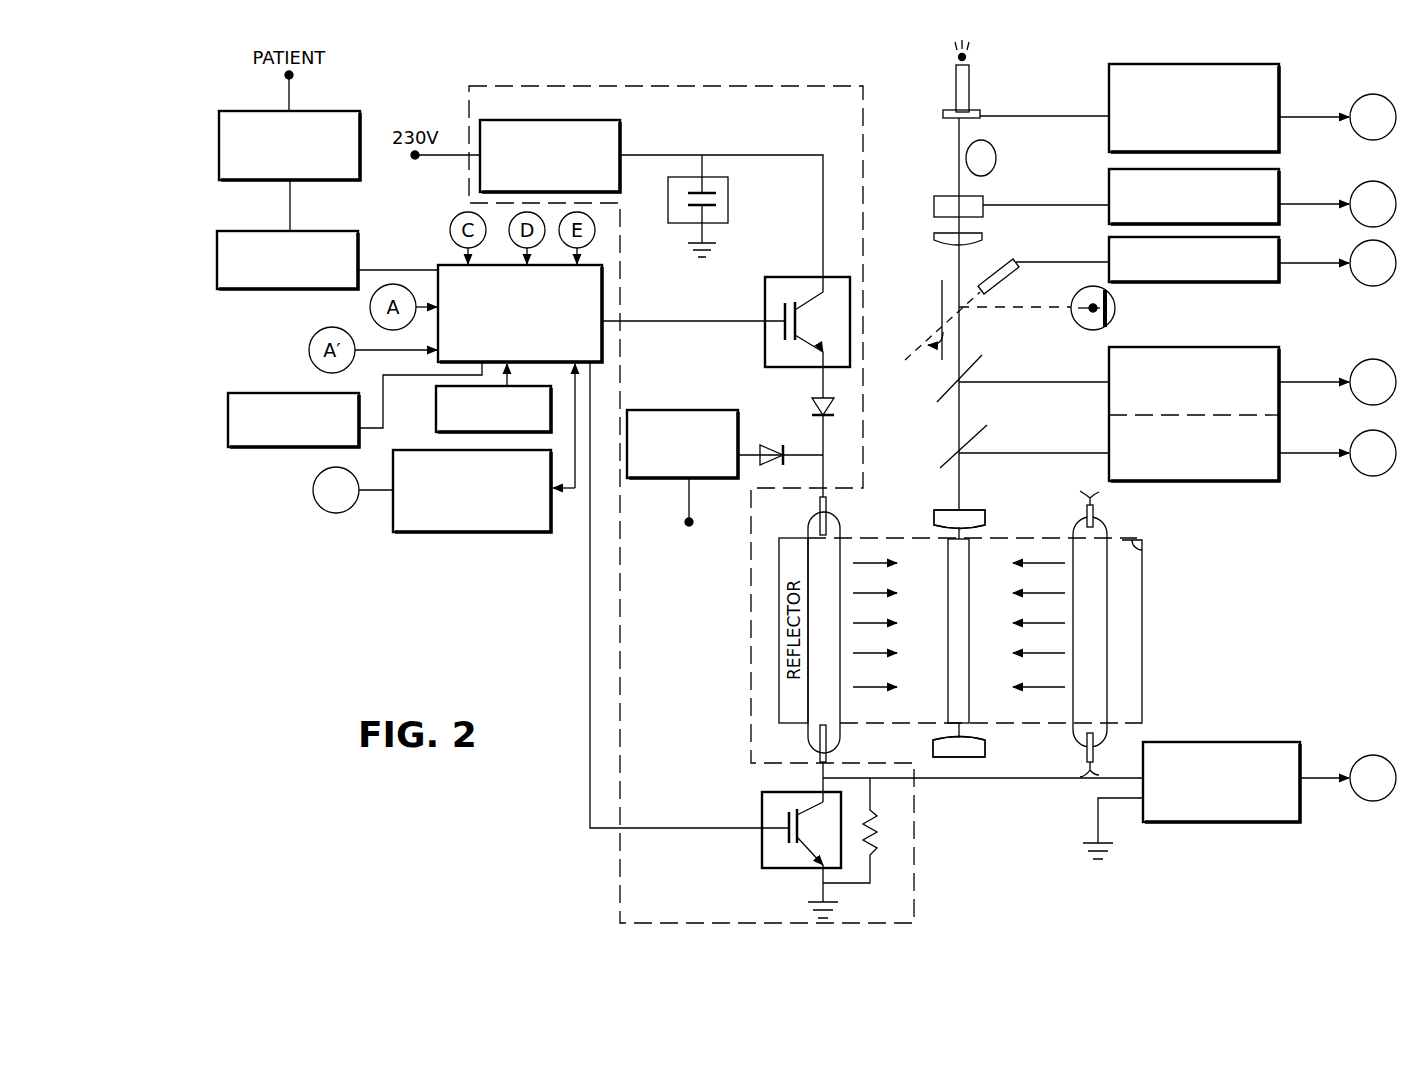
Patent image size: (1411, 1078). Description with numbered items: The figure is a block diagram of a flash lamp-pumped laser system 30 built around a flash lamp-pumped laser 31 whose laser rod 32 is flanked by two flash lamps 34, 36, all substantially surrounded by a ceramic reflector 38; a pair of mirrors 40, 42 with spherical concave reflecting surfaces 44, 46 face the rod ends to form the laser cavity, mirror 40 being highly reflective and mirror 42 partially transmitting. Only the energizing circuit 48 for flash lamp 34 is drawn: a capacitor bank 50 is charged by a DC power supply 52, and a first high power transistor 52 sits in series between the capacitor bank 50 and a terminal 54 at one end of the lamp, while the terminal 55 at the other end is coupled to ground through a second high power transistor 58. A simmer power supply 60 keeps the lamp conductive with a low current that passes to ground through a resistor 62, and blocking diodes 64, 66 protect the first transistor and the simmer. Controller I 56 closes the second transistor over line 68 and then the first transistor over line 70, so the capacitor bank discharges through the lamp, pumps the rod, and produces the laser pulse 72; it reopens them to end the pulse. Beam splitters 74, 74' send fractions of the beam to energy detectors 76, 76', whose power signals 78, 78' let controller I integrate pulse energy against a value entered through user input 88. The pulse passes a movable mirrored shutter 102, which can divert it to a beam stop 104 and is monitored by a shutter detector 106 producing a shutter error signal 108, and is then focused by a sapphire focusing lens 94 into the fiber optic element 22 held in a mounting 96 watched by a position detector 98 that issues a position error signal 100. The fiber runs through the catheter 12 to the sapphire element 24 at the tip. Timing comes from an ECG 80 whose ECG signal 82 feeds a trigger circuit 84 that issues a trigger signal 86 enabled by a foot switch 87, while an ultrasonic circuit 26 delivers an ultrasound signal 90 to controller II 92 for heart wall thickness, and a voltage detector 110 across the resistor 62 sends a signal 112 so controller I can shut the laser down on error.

The catheter 12 is at (955, 96).
The fiber optic element 22 is at (960, 140).
The sapphire element 24 is at (968, 58).
The ultrasonic circuit 26 is at (1108, 88).
The flash lamp-pumped laser system 30 is at (535, 625).
The flash lamp-pumped laser 31 is at (1152, 622).
The laser rod 32 is at (938, 631).
The flash lamp 34 is at (843, 526).
The flash lamp 36 is at (1075, 522).
The ceramic reflector 38 is at (1140, 536).
The mirror 40 is at (985, 752).
The mirror 42 is at (982, 513).
The spherical concave reflecting surface 44 is at (935, 742).
The spherical concave reflecting surface 46 is at (940, 529).
The energizing circuit 48 is at (850, 118).
The capacitor bank 50 is at (728, 214).
The DC power supply / high power transistor T1 52 is at (620, 137).
The terminal 54 is at (815, 512).
The terminal 55 is at (820, 752).
The controller I 56 is at (445, 266).
The high power transistor T2 58 is at (762, 806).
The simmer power supply 60 is at (698, 410).
The resistor 62 is at (876, 820).
The blocking diode 64 is at (812, 406).
The blocking diode 66 is at (765, 446).
The control line 68 is at (588, 762).
The control line 70 is at (683, 321).
The laser pulse 72 is at (958, 490).
The beam splitter 74 is at (980, 372).
The beam splitter 74' is at (980, 433).
The energy detector 76 is at (1119, 395).
The energy detector 76' is at (1113, 482).
The power signal 78 is at (1337, 373).
The power signal 78' is at (1337, 444).
The ECG 80 is at (317, 111).
The ECG signal 82 is at (290, 201).
The trigger circuit 84 is at (336, 231).
The trigger signal 86 is at (388, 269).
The foot switch 87 is at (270, 392).
The user input 88 is at (436, 410).
The ultrasound signal 90 is at (1310, 116).
The controller II 92 is at (430, 533).
The sapphire focusing lens 94 is at (934, 243).
The mounting 96 is at (934, 206).
The position detector 98 is at (1108, 180).
The position error signal 100 is at (1308, 203).
The movable mirrored shutter 102 is at (942, 303).
The beam stop 104 is at (1118, 311).
The shutter detector 106 is at (1260, 282).
The shutter error signal 108 is at (1300, 262).
The voltage detector 110 is at (1230, 742).
The signal 112 is at (1318, 775).